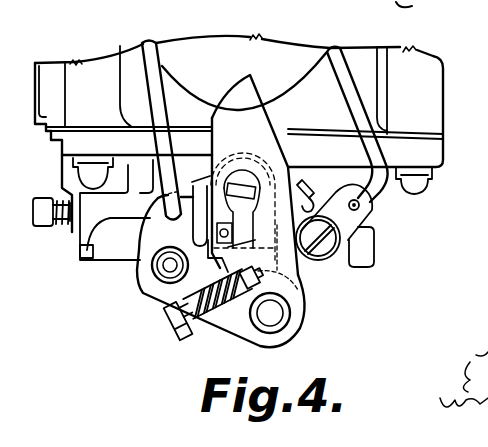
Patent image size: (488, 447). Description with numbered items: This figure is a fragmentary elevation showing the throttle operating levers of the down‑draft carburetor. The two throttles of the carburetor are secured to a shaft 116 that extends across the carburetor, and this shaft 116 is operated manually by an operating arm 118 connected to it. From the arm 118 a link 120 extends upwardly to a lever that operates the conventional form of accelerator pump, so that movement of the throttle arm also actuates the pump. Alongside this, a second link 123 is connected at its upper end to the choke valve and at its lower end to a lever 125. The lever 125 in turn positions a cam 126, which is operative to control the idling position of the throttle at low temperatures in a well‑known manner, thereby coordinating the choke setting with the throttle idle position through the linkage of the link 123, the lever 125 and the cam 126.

The shaft 116 is at (238, 190).
The arm 118 is at (139, 283).
The link 120 is at (152, 42).
The link 123 is at (331, 50).
The lever 125 is at (362, 222).
The cam 126 is at (306, 285).